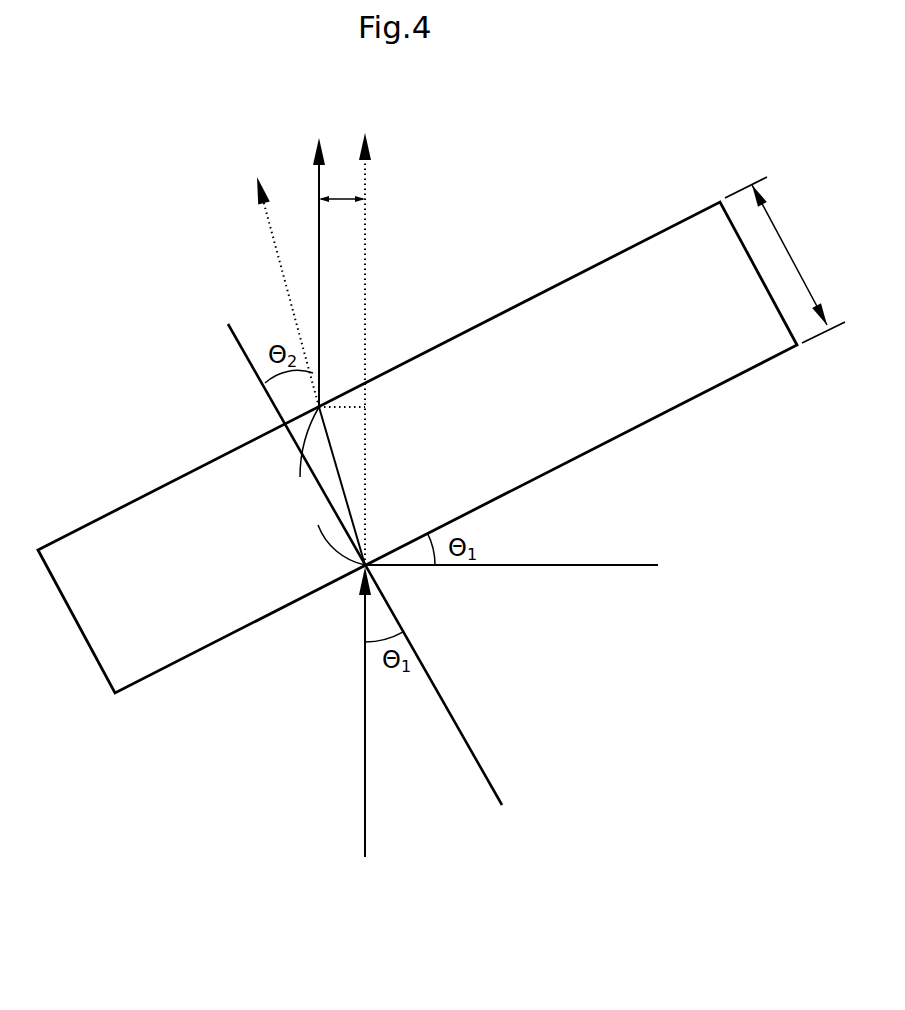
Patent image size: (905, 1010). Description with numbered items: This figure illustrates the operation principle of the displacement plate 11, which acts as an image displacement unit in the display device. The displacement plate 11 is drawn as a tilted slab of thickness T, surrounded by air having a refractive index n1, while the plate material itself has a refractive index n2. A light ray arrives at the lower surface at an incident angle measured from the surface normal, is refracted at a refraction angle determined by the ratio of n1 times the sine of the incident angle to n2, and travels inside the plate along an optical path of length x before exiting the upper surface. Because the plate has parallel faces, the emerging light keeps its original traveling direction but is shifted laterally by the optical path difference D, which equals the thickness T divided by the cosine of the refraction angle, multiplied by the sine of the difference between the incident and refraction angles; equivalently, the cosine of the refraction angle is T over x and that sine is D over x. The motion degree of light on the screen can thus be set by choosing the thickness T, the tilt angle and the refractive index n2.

The displacement plate 11 is at (518, 332).
The refractive index of air n1 is at (253, 712).
The refractive index of the displacement plate n2 is at (240, 534).
The thickness of the displacement plate T is at (785, 260).
The optical path difference D is at (342, 186).
The length of the optical path of the refracted light within the displacement plate x is at (331, 529).